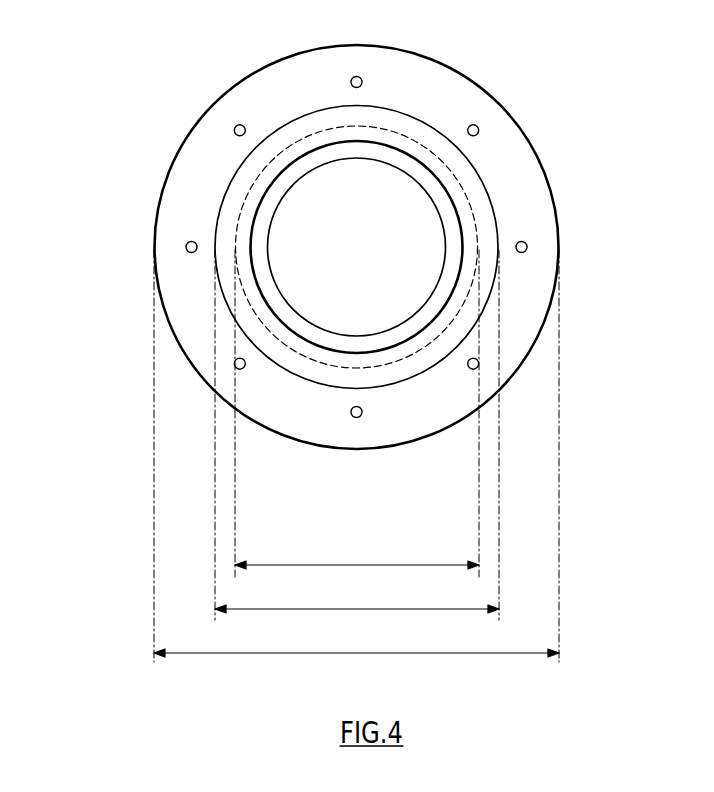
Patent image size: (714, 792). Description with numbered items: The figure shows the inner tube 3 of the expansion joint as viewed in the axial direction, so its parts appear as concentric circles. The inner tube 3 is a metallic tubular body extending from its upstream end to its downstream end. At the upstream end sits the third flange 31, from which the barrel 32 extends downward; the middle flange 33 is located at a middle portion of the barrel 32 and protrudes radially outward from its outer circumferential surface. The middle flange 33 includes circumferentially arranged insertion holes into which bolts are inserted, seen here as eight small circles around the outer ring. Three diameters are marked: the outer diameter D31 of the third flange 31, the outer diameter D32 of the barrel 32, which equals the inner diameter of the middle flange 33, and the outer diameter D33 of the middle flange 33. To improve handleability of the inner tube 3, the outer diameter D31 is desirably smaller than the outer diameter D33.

The inner tube 3 is at (117, 192).
The third flange 31 is at (300, 117).
The barrel 32 is at (453, 178).
The middle flange 33 is at (217, 100).
The outer diameter of the third flange D31 is at (357, 595).
The outer diameter of the barrel D32 is at (357, 552).
The outer diameter of the middle flange D33 is at (356, 640).